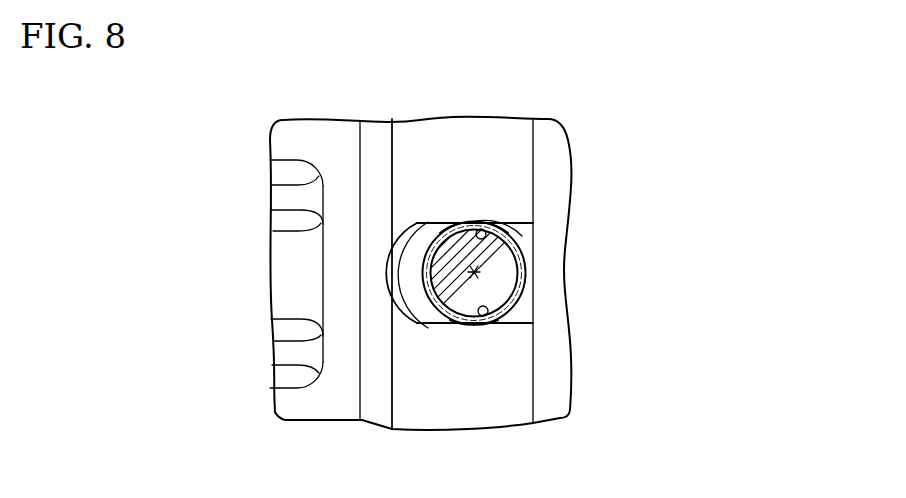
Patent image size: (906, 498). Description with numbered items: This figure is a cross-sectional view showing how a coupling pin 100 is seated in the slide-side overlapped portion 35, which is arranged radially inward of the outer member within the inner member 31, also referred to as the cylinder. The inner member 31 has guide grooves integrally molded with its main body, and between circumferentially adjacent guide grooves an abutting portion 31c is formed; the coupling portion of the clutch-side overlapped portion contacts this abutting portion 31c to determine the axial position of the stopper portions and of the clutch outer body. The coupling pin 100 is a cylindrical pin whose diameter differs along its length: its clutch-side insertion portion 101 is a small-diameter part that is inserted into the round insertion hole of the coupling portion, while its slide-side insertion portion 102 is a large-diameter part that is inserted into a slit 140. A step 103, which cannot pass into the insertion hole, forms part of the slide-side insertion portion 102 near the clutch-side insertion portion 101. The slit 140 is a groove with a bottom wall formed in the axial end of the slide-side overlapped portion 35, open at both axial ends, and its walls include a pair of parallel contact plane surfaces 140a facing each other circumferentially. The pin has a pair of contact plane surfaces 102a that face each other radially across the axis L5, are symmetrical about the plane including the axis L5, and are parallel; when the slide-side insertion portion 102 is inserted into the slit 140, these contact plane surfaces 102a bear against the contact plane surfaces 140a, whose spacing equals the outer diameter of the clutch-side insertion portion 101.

The inner member 31 is at (547, 156).
The abutting portion 31c is at (372, 368).
The slide-side overlapped portion 35 is at (455, 400).
The coupling pin 100 is at (522, 236).
The clutch-side insertion portion 101 is at (422, 273).
The slide-side insertion portion 102 is at (417, 226).
The contact plane surfaces 102a is at (452, 222).
The step 103 is at (405, 248).
The slit 140 is at (527, 312).
The contact plane surfaces 140a is at (495, 222).
The axis L5 is at (480, 271).